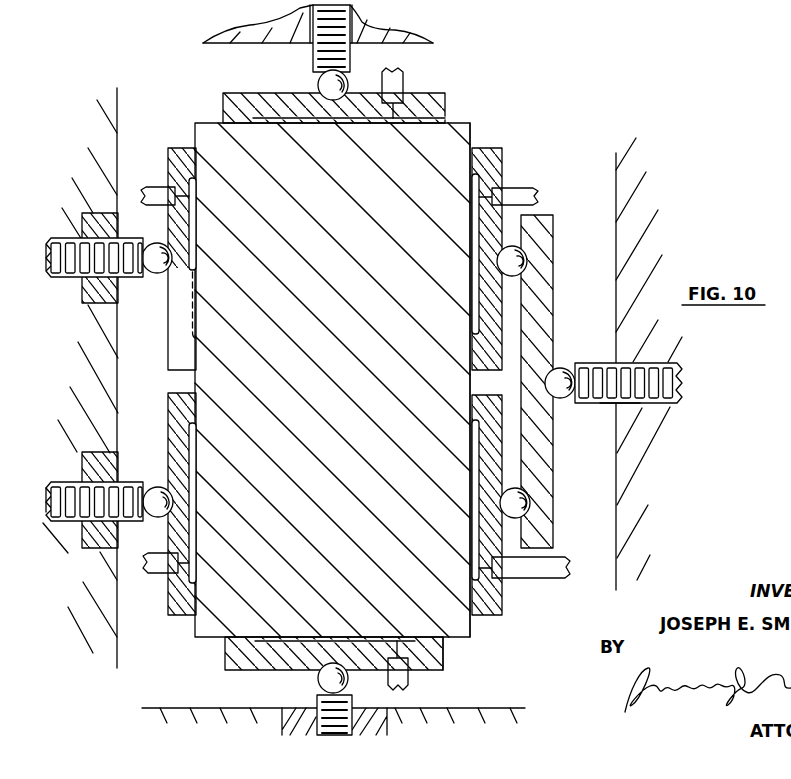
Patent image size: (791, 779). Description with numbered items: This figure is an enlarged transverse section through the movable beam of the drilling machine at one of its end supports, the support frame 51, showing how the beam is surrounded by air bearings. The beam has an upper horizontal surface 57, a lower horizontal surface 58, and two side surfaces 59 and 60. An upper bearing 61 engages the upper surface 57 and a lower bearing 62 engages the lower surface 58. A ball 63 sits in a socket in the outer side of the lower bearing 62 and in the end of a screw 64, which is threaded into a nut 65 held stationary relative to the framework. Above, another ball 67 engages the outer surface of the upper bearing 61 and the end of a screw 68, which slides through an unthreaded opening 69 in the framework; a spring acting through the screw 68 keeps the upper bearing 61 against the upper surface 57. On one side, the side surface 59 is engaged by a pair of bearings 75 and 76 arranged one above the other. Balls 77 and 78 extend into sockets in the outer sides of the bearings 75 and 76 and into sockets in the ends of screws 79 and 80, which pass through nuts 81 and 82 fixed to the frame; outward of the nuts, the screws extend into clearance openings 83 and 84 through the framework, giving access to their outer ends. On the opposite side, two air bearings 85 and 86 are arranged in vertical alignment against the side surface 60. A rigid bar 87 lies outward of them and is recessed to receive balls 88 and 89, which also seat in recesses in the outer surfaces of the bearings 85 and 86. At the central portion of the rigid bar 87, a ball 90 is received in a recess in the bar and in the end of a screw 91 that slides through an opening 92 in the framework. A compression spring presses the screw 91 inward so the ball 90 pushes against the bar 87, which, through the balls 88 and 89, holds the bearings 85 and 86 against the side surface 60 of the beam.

The support frame 51 is at (117, 638).
The upper horizontal surface 57 is at (226, 120).
The lower horizontal surface 58 is at (225, 645).
The side surface 59 is at (195, 136).
The side surface 60 is at (470, 134).
The upper bearing 61 is at (444, 106).
The lower bearing 62 is at (445, 650).
The ball 63 is at (320, 680).
The screw 64 is at (353, 700).
The nut 65 is at (282, 706).
The ball 67 is at (318, 84).
The screw 68 is at (352, 62).
The unthreaded opening 69 is at (313, 50).
The bearing 75 is at (168, 163).
The bearing 76 is at (168, 598).
The ball 77 is at (156, 246).
The ball 78 is at (155, 486).
The screw 79 is at (72, 245).
The screw 80 is at (58, 514).
The nut 81 is at (108, 284).
The nut 82 is at (108, 535).
The clearance opening 83 is at (52, 272).
The clearance opening 84 is at (55, 484).
The air bearing 85 is at (502, 166).
The air bearing 86 is at (502, 616).
The rigid bar 87 is at (553, 448).
The ball 88 is at (528, 252).
The ball 89 is at (528, 510).
The ball 90 is at (560, 368).
The screw 91 is at (600, 362).
The opening 92 is at (608, 403).